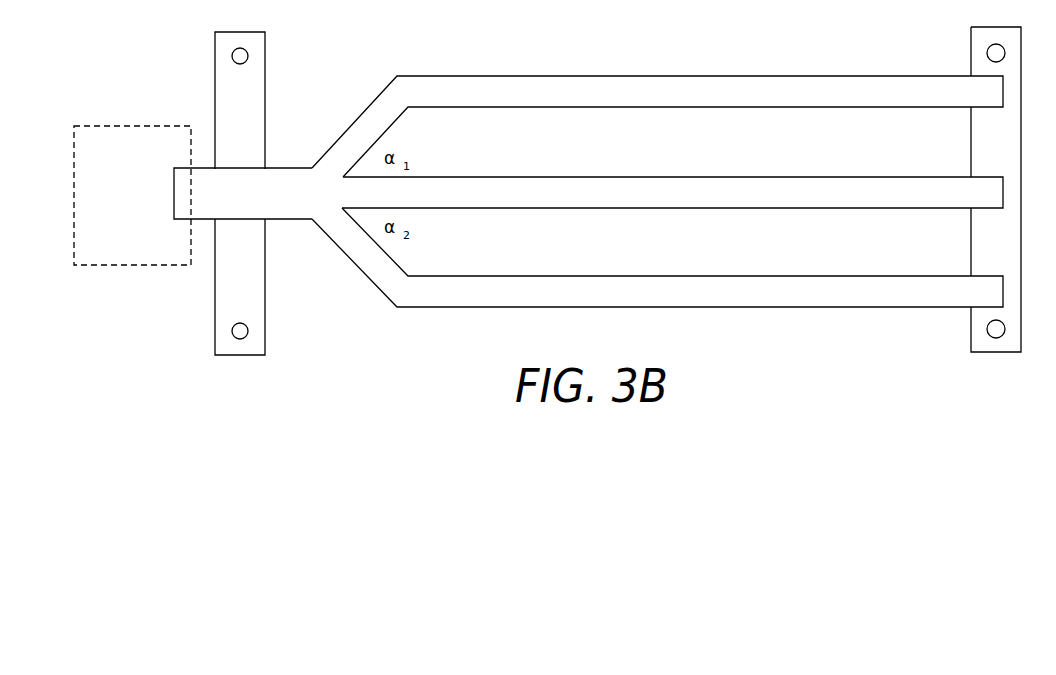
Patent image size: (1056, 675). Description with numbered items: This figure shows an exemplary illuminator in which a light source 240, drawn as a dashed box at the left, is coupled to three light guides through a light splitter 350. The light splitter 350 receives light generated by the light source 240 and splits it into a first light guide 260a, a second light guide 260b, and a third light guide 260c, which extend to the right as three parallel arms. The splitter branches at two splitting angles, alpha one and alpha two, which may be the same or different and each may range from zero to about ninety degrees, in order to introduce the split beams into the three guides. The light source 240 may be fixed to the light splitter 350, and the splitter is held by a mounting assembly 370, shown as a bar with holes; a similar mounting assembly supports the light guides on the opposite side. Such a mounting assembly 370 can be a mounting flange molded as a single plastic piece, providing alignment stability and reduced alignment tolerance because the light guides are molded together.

The light source 240 is at (147, 206).
The light splitter 350 is at (292, 180).
The mounting assembly 370 is at (255, 253).
The first light guide 260a is at (651, 88).
The second light guide 260b is at (651, 188).
The third light guide 260c is at (651, 283).